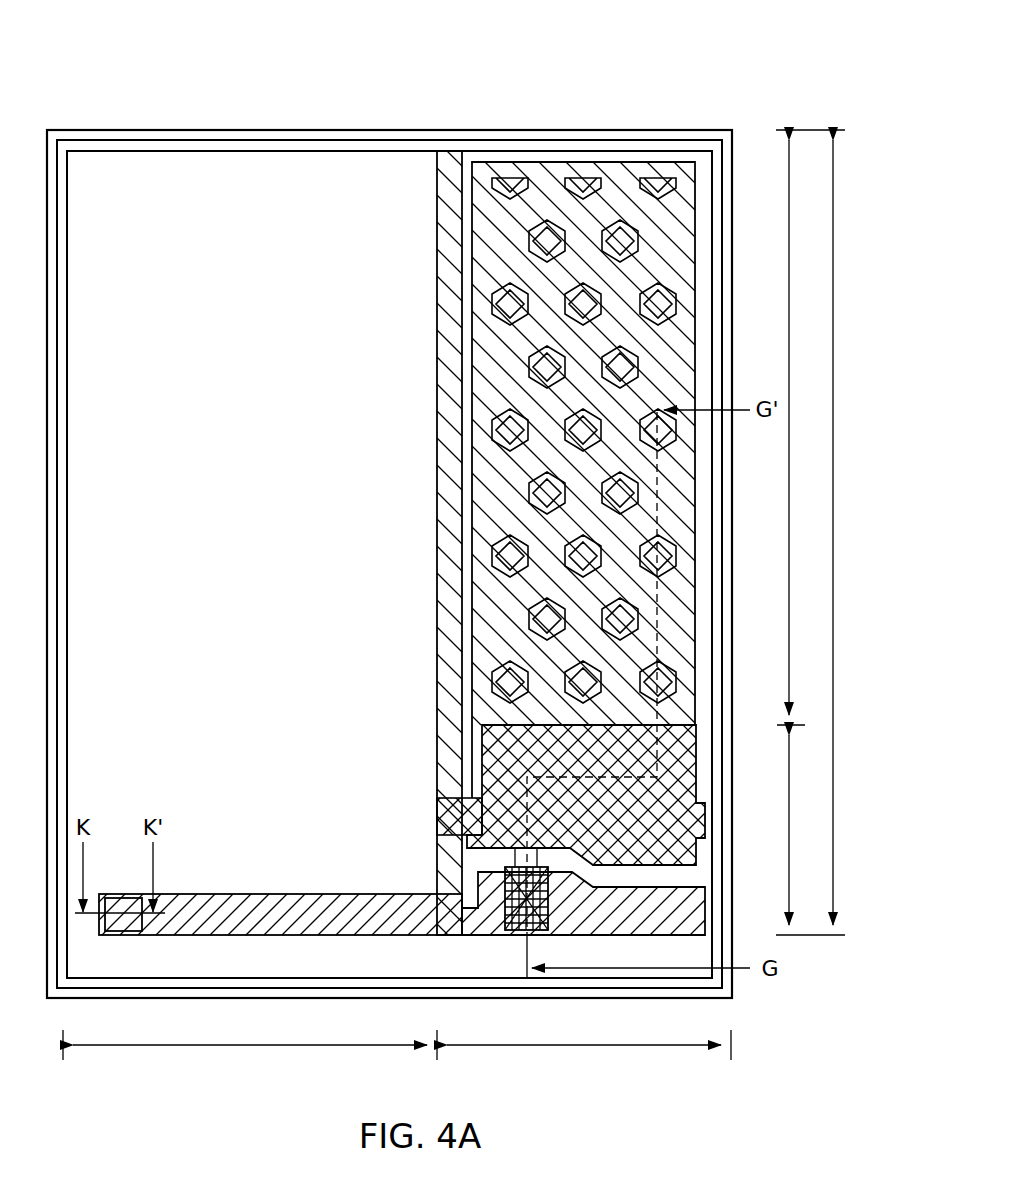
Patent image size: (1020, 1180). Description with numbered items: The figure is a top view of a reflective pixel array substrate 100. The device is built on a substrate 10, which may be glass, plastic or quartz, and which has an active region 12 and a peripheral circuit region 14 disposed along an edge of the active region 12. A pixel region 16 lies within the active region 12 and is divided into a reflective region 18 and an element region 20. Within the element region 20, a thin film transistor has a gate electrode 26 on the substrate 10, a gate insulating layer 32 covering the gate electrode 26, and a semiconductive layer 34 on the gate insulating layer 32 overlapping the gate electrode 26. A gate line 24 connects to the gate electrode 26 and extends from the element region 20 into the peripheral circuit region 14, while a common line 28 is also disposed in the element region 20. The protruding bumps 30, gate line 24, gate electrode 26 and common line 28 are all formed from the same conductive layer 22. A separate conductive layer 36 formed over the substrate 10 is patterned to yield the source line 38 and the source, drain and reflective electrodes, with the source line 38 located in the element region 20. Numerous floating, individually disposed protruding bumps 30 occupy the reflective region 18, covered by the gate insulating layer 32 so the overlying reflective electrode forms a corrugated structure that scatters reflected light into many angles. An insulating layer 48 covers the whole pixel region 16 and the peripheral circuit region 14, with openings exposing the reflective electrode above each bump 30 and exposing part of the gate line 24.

The reflective pixel array substrate 100 is at (714, 85).
The substrate 10 is at (203, 130).
The gate insulating layer 32 is at (258, 140).
The insulating layer 48 is at (307, 151).
The source line 38 is at (446, 168).
The conductive layer 36 is at (622, 170).
The protruding bumps 30 is at (674, 430).
The common line 28 is at (440, 832).
The gate line 24 is at (372, 937).
The conductive layer 22 is at (705, 917).
The semiconductive layer 34 is at (515, 932).
The gate electrode 26 is at (492, 945).
The reflective region 18 is at (810, 427).
The element region 20 is at (810, 835).
The pixel region 16 is at (843, 532).
The peripheral circuit region 14 is at (250, 1039).
The active region 12 is at (589, 1039).